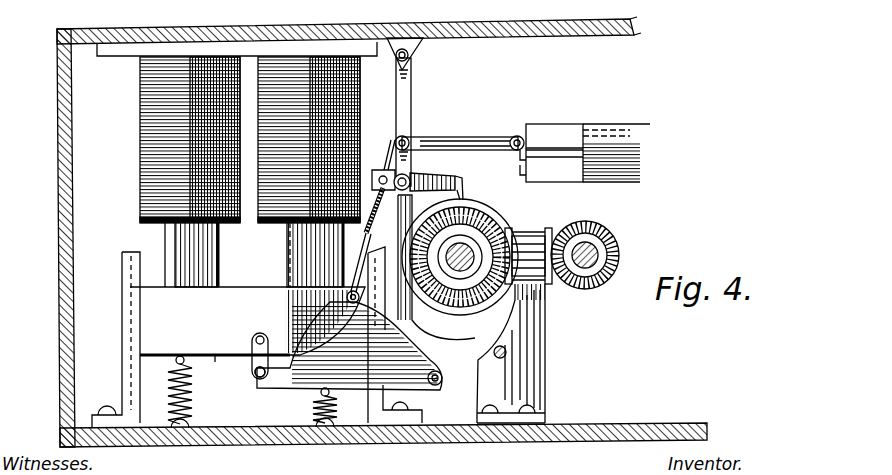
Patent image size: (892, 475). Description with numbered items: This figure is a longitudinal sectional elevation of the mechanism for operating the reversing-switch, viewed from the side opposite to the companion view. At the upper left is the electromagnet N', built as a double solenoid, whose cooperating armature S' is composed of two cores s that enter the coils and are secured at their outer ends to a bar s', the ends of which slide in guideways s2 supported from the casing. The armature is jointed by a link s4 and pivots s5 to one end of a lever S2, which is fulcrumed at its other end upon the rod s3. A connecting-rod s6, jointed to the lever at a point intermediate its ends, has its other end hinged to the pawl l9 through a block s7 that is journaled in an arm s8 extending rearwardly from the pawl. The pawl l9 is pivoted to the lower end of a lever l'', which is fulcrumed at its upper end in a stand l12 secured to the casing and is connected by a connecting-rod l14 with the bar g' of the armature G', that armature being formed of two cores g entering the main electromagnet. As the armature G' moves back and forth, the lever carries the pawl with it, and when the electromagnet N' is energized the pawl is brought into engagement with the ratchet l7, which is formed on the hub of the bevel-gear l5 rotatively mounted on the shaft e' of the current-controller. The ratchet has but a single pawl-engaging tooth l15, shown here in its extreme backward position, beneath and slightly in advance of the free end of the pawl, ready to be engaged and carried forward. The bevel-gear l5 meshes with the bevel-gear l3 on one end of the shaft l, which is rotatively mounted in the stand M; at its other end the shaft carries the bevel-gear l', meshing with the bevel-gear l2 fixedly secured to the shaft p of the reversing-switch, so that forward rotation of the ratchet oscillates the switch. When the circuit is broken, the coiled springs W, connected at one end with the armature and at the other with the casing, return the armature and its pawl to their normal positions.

The electromagnet N' is at (250, 140).
The cores s is at (243, 254).
The guideways s2 is at (133, 354).
The armature S' is at (247, 307).
The link s4 is at (253, 376).
The lever S2 is at (349, 354).
The pivots s5 is at (262, 386).
The bar s' is at (211, 368).
The rod s3 is at (441, 383).
The coiled springs W is at (192, 412).
The connecting-rod s6 is at (363, 258).
The block s7 is at (390, 190).
The arm s8 is at (384, 167).
The stand l12 is at (418, 52).
The lever l'' is at (417, 122).
The connecting-rod l14 is at (455, 138).
The pawl l9 is at (438, 182).
The pawl-engaging tooth l15 is at (462, 178).
The ratchet l7 is at (450, 267).
The bevel-gear l5 is at (463, 218).
The shaft e' is at (457, 292).
The bevel-gear l3 is at (509, 230).
The bevel-gear l' is at (552, 240).
The bevel-gear l2 is at (585, 242).
The shaft p is at (598, 254).
The shaft l is at (535, 274).
The stand M is at (548, 353).
The armature G' is at (554, 139).
The bar g' is at (554, 125).
The cores g is at (616, 141).